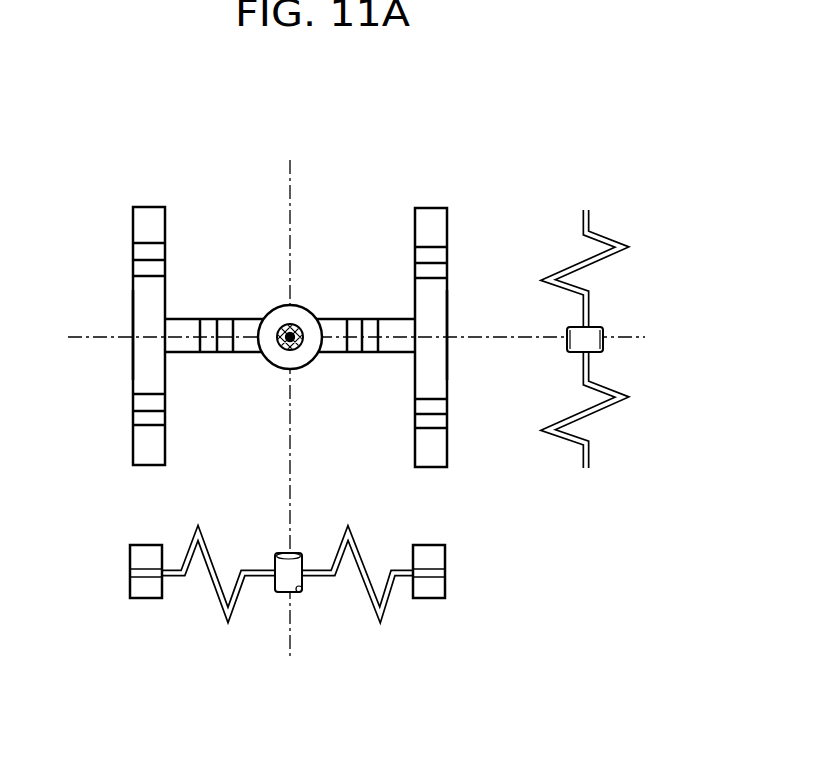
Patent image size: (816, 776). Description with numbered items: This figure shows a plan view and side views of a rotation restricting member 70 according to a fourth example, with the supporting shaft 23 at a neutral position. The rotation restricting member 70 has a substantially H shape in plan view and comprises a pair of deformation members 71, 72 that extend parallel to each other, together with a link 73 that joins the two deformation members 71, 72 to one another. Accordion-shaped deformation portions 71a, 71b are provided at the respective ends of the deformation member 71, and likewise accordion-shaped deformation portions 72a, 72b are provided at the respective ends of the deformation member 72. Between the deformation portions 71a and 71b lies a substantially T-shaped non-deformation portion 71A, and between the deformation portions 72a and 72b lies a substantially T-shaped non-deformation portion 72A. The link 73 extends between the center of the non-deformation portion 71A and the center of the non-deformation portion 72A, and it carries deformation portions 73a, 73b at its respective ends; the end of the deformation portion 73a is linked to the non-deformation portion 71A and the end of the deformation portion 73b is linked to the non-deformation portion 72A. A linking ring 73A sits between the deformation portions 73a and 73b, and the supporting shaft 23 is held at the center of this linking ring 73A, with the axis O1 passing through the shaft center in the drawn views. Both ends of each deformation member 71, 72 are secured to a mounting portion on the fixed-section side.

The rotation restricting member 70 is at (447, 110).
The deformation member 71 is at (104, 295).
The deformation portion 71a is at (132, 248).
The non-deformation portion 71A is at (132, 312).
The deformation portion 71b is at (132, 444).
The deformation member 72 is at (479, 301).
The deformation portion 72a is at (447, 249).
The non-deformation portion 72A is at (447, 362).
The deformation portion 72b is at (447, 420).
The link 73 is at (290, 397).
The deformation portion 73a is at (212, 353).
The deformation portion 73b is at (372, 353).
The linking ring 73A is at (292, 370).
The supporting shaft 23 is at (300, 326).
The rotation axis O1 is at (283, 330).